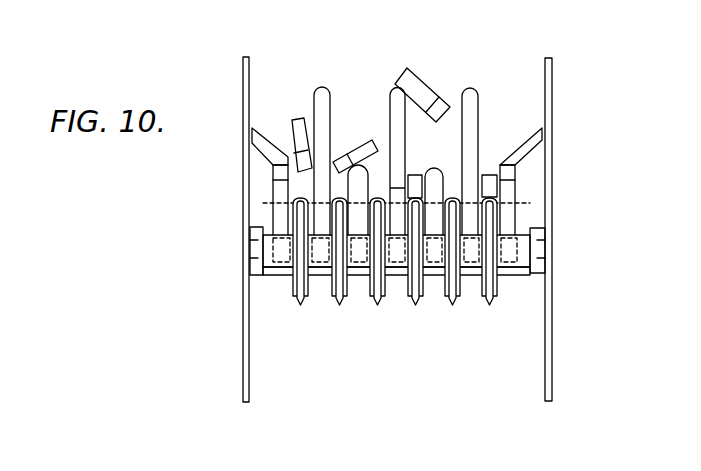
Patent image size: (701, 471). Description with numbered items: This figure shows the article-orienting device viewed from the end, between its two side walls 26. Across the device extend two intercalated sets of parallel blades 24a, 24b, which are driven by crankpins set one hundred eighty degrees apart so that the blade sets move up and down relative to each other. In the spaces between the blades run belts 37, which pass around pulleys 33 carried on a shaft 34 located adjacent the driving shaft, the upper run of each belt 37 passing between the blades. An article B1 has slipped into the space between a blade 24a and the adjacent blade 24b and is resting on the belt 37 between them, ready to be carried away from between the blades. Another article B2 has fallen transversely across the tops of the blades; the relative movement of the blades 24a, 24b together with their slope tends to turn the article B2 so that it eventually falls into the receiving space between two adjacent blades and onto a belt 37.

The side wall 26 is at (552, 93).
The pulley 33 is at (490, 277).
The shaft 34 is at (522, 235).
The belt 37 is at (300, 305).
The blade 24a is at (280, 193).
The blade 24b is at (396, 90).
The article B2 is at (414, 72).
The article B1 is at (490, 173).